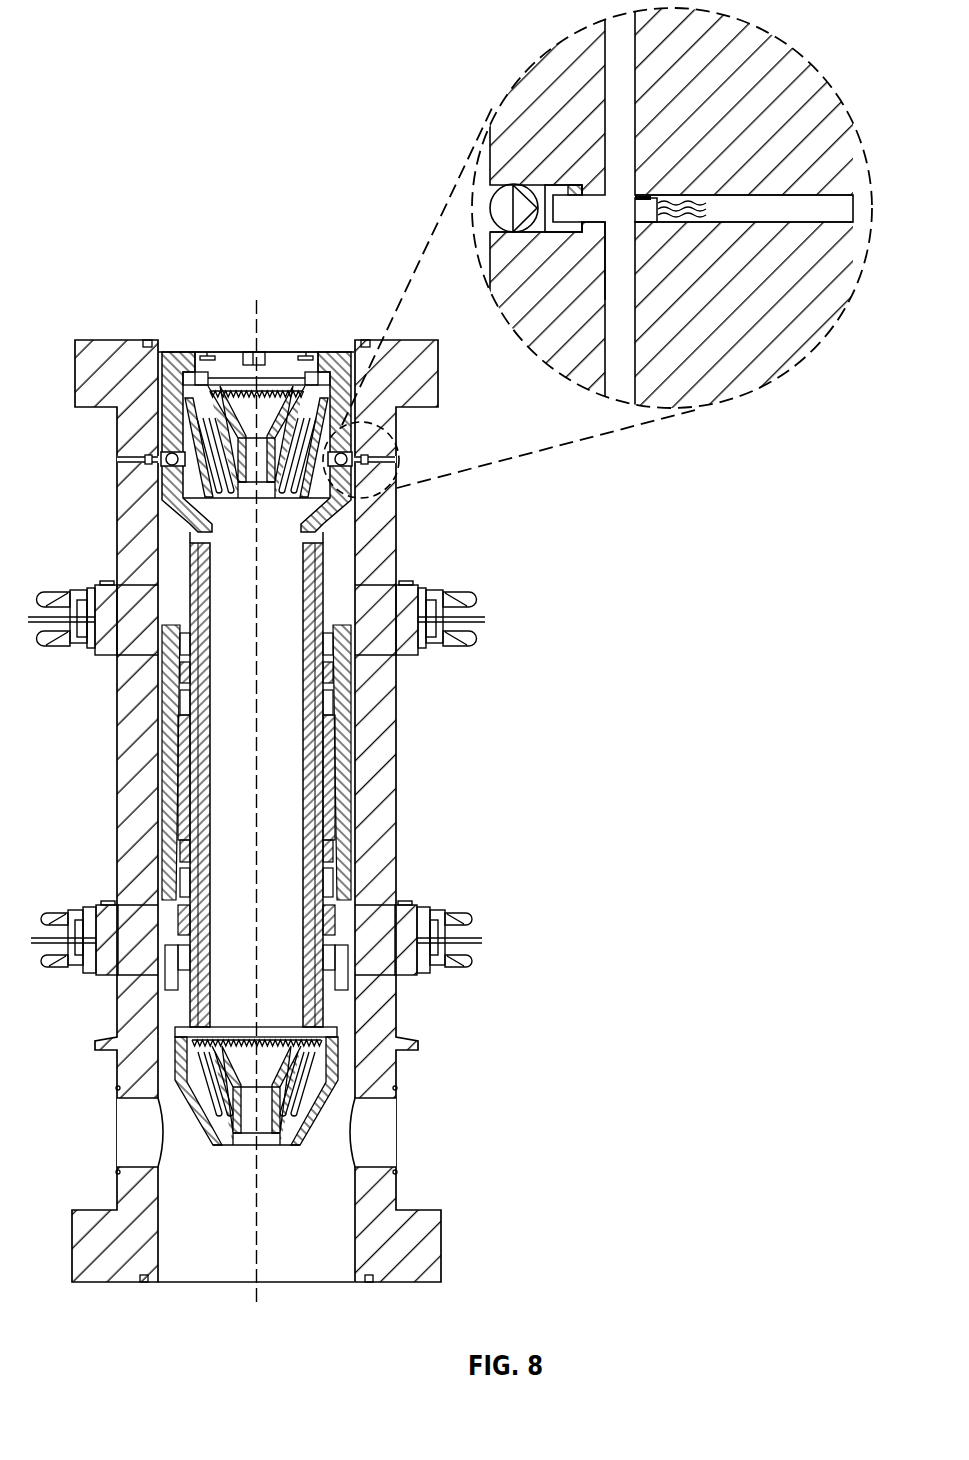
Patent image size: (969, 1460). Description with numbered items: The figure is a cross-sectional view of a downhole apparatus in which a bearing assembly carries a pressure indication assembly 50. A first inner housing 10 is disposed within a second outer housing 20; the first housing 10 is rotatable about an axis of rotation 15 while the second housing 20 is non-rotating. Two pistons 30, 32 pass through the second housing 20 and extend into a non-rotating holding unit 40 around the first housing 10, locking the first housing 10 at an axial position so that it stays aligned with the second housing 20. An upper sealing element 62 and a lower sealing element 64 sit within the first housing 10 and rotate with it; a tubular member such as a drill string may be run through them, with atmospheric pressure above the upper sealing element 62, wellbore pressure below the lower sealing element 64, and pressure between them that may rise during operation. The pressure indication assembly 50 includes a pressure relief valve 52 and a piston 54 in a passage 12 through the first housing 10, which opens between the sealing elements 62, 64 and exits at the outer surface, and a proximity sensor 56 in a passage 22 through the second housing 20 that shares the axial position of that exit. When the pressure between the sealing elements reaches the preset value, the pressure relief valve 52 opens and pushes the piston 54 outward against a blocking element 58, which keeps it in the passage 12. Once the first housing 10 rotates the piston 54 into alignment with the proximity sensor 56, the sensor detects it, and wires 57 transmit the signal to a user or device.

The first inner housing 10 is at (333, 432).
The passage 12 is at (541, 237).
The axis of rotation 15 is at (255, 322).
The second outer housing 20 is at (378, 540).
The passage 22 is at (730, 192).
The piston 30 is at (453, 638).
The piston 32 is at (455, 958).
The non-rotating holding unit 40 is at (340, 785).
The pressure indication assembly 50 is at (495, 43).
The pressure relief valve 52 is at (500, 205).
The piston 54 is at (562, 185).
The proximity sensor 56 is at (648, 222).
The wires 57 is at (697, 215).
The blocking element 58 is at (570, 188).
The upper sealing element 62 is at (198, 467).
The lower sealing element 64 is at (190, 1108).